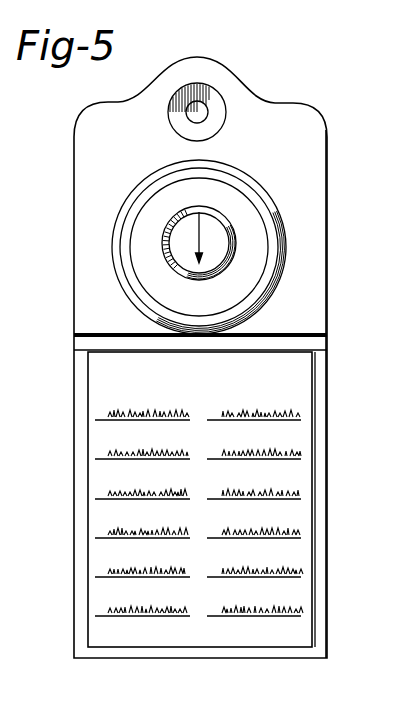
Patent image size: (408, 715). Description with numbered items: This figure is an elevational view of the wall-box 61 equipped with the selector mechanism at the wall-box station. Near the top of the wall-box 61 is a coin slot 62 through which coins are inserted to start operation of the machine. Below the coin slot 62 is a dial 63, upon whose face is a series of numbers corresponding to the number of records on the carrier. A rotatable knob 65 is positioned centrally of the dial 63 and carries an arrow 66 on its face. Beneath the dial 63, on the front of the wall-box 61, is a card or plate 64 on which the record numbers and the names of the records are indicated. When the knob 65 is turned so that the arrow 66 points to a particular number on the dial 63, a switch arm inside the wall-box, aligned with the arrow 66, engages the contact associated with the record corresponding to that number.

The wall-box 61 is at (327, 322).
The coin slot 62 is at (223, 102).
The dial 63 is at (245, 202).
The card or plate 64 is at (305, 380).
The rotatable knob 65 is at (218, 235).
The arrow 66 is at (198, 257).